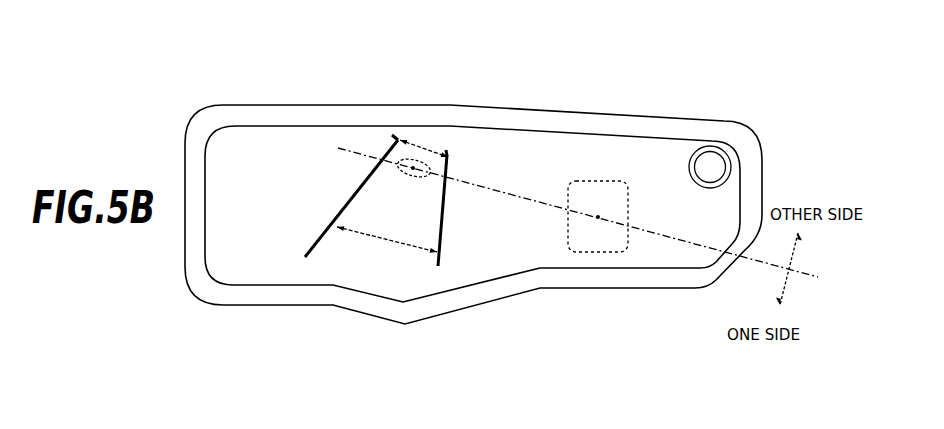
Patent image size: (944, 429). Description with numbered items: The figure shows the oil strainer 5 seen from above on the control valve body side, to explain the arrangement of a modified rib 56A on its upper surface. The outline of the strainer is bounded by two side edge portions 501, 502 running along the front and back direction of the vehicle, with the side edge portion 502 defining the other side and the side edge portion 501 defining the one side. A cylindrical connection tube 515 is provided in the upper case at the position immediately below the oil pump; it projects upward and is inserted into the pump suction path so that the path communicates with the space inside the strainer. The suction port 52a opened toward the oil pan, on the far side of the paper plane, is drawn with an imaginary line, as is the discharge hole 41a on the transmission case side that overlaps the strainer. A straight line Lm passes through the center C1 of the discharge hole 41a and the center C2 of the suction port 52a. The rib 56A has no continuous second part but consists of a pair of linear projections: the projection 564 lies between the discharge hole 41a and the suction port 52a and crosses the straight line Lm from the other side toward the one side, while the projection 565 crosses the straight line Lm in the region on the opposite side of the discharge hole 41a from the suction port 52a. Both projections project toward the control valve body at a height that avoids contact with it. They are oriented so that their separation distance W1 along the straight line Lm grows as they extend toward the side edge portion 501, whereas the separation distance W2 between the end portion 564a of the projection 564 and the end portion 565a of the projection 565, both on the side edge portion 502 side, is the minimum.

The oil strainer 5 is at (538, 326).
The discharge hole 41a is at (413, 178).
The suction port 52a is at (629, 197).
The rib 56A is at (465, 155).
The side edge portion 501 is at (263, 306).
The side edge portion 502 is at (268, 105).
The connection tube 515 is at (698, 146).
The projection 564 is at (440, 242).
The end portion 564a is at (448, 152).
The projection 565 is at (341, 215).
The end portion 565a is at (394, 134).
The center C1 is at (411, 171).
The center C2 is at (598, 215).
The straight line Lm is at (560, 205).
The separation distance W1 is at (387, 248).
The separation distance W2 is at (424, 144).